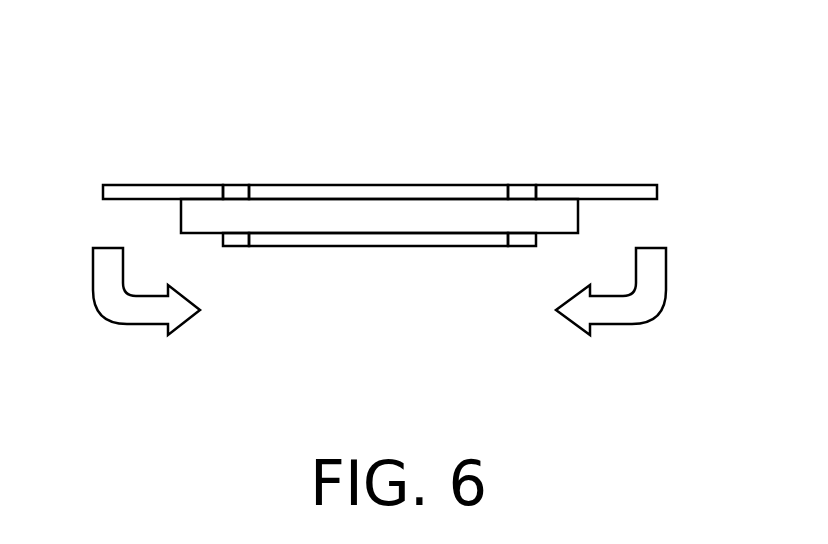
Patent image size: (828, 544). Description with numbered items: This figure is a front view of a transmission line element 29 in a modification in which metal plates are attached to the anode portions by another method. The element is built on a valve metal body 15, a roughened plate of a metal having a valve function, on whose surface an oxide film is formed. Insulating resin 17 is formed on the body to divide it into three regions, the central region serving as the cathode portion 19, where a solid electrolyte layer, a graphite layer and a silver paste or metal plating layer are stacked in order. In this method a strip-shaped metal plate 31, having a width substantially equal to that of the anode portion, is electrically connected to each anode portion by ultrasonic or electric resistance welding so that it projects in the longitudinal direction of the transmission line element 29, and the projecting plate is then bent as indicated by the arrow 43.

The valve metal body 15 is at (200, 217).
The insulating resin 17 is at (243, 190).
The cathode portion 19 is at (329, 190).
The transmission line element 29 is at (405, 160).
The strip-shaped metal plate 31 is at (135, 185).
The arrow 43 is at (129, 313).